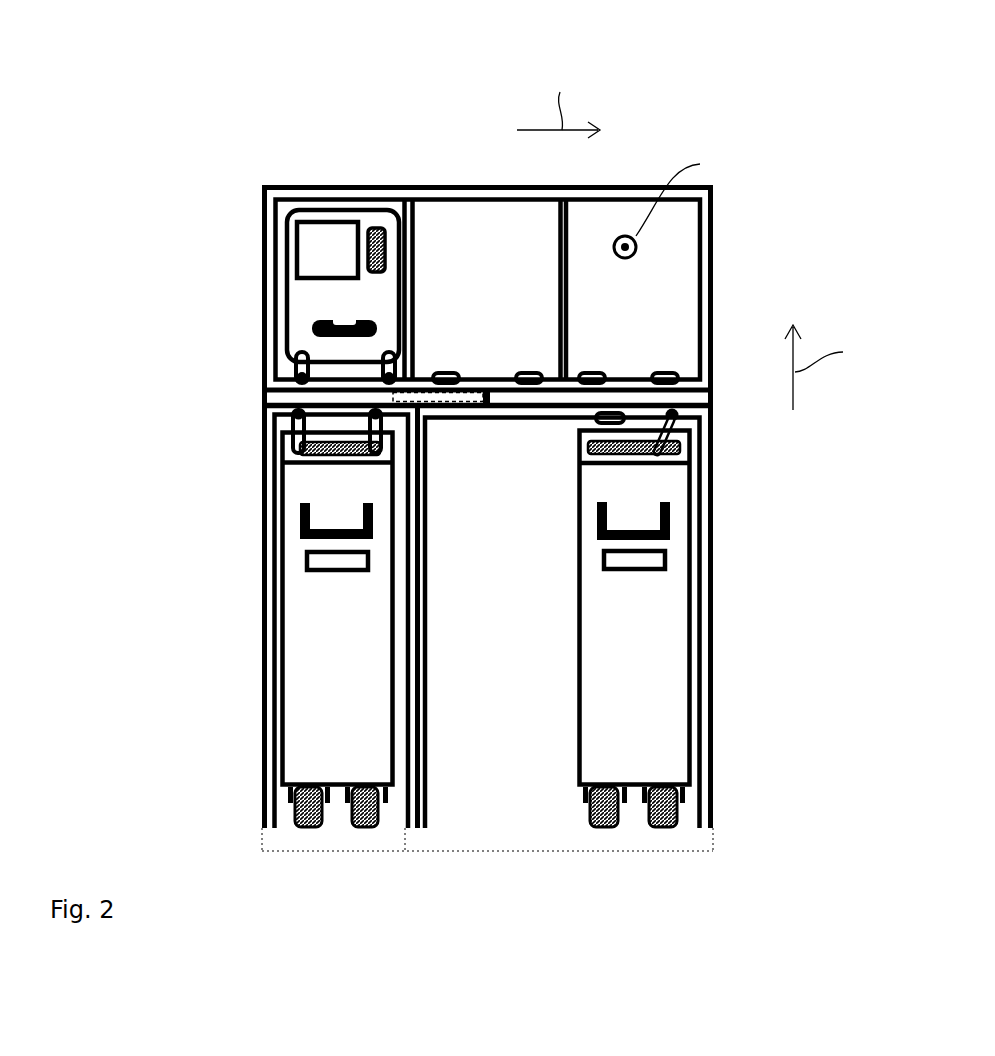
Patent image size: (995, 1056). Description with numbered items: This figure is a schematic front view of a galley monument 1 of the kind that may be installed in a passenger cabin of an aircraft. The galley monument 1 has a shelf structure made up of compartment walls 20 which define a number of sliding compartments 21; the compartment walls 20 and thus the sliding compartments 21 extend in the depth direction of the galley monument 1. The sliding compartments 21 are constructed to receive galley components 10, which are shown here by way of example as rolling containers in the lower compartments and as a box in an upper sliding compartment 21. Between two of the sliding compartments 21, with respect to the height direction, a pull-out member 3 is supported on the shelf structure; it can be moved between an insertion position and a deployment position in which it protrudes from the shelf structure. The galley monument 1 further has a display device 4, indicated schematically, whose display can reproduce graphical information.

The galley monument 1 is at (712, 48).
The pull-out member 3 is at (280, 397).
The display device 4 is at (407, 400).
The galley component 10 is at (486, 518).
The compartment wall 20 is at (445, 188).
The sliding compartment 21 is at (175, 818).